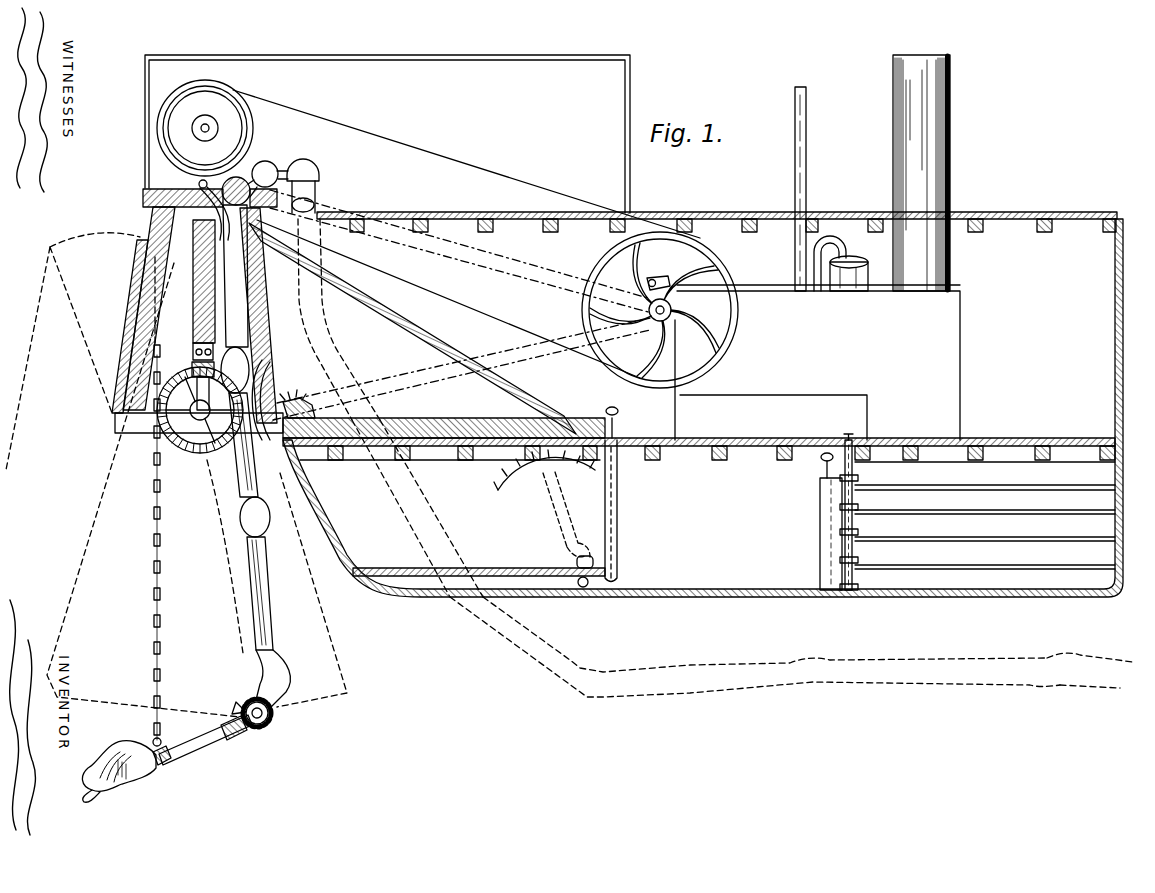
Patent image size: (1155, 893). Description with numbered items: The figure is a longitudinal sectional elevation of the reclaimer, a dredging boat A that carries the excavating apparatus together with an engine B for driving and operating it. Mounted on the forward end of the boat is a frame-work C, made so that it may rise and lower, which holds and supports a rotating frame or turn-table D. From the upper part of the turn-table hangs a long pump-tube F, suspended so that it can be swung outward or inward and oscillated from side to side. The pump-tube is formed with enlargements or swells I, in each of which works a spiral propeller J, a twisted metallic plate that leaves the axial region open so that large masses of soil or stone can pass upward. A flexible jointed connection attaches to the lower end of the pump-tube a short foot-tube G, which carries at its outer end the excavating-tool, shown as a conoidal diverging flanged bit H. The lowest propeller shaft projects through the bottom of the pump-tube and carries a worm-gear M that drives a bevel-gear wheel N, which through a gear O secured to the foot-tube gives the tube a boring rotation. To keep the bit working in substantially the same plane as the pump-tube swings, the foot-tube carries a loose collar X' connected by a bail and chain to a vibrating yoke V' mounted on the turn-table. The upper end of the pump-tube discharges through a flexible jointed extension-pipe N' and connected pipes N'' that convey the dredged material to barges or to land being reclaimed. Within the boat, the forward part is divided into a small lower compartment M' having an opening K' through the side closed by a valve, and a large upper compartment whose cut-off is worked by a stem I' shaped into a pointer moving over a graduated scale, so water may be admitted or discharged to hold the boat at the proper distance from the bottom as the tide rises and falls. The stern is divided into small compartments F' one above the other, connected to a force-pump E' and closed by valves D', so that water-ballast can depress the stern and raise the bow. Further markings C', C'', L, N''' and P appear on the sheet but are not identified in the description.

The boat A is at (707, 408).
The engine B is at (817, 247).
The frame-work C is at (149, 308).
The connecting rod lower position C' is at (461, 369).
The connecting rod upper position C'' is at (459, 251).
The turn-table D is at (119, 766).
The cut-off or valves D' is at (861, 529).
The force-pump E' is at (821, 512).
The pump-tube F is at (254, 405).
The compartments F' is at (985, 527).
The foot-tube G is at (395, 589).
The conoidal diverging flanged bit H is at (339, 634).
The swells I is at (277, 583).
The stem or operating-arm of the cut-off I' is at (561, 514).
The spiral propeller J is at (605, 554).
The opening K' is at (569, 601).
The hose L is at (417, 508).
The worm-gear or screw power M is at (281, 715).
The small lower compartment M' is at (479, 578).
The bevel-gear wheel N is at (311, 487).
The flexible jointed extension-pipe N' is at (312, 186).
The extension-pipe N'' is at (755, 647).
The hose end N''' is at (1090, 670).
The gear O is at (238, 705).
The plate P is at (143, 190).
The vibrating yoke V' is at (123, 475).
The loose collar X' is at (169, 501).